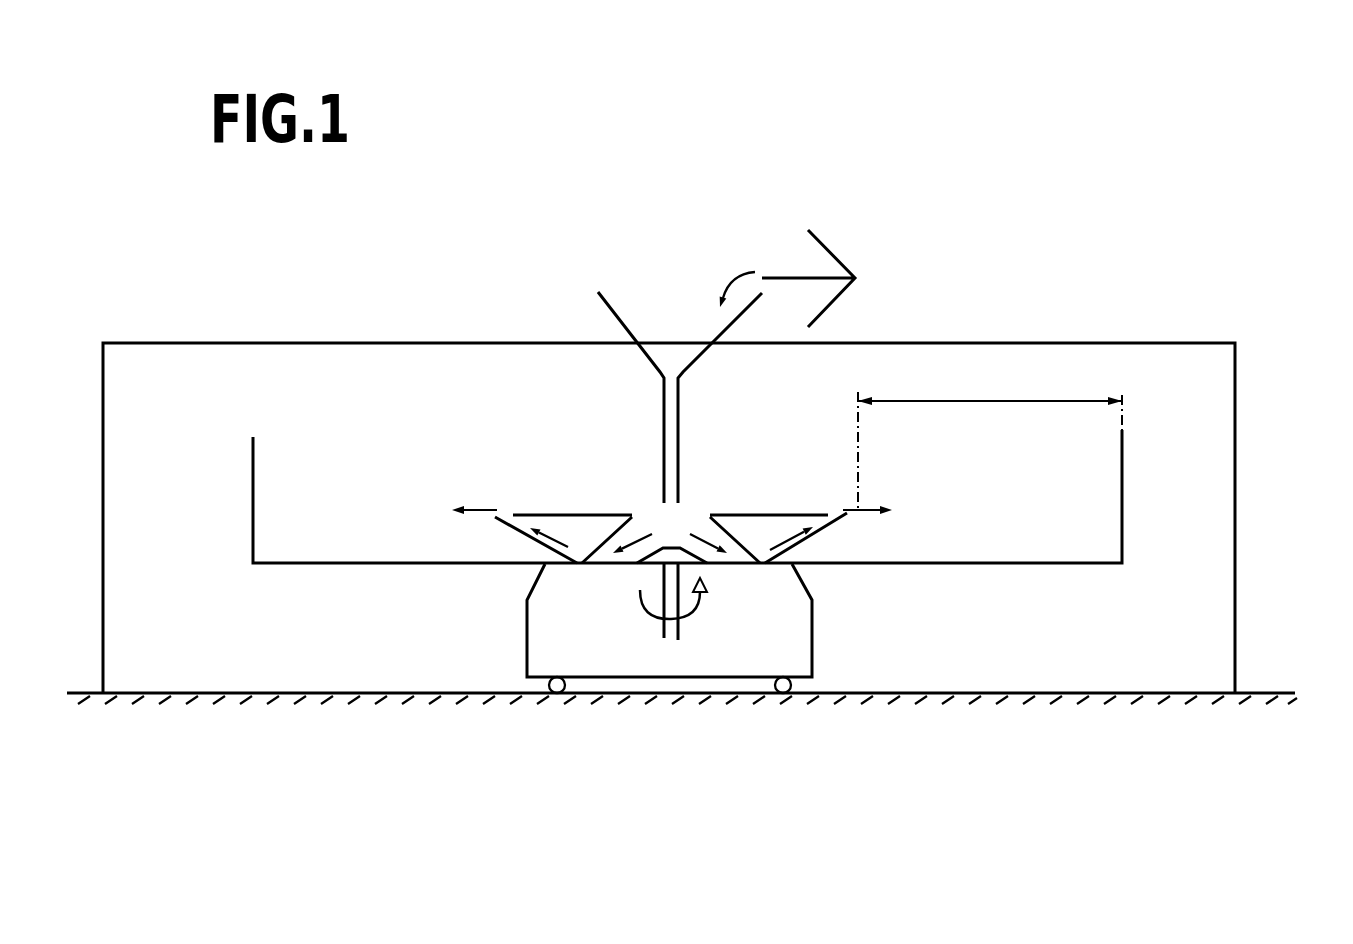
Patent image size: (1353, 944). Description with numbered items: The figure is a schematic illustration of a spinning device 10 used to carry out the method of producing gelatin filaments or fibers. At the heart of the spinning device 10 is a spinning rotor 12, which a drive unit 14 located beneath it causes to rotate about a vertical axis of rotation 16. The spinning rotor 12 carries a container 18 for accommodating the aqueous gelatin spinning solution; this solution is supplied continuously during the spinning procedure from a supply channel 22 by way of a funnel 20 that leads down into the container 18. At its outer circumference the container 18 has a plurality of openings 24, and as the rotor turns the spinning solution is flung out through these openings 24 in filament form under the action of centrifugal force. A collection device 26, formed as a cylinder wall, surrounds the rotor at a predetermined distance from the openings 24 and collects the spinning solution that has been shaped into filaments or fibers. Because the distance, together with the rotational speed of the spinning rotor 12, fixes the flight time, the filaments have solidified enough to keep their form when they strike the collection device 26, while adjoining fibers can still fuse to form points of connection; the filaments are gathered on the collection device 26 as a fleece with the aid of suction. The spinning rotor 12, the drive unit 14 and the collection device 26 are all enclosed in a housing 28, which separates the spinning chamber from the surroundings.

The spinning device 10 is at (1168, 230).
The spinning rotor 12 is at (838, 547).
The drive unit 14 is at (774, 646).
The vertical axis of rotation 16 is at (673, 630).
The container 18 is at (703, 512).
The funnel 20 is at (581, 289).
The supply channel 22 is at (768, 258).
The openings 24 is at (515, 486).
The collection device 26 is at (1140, 502).
The housing 28 is at (1258, 403).